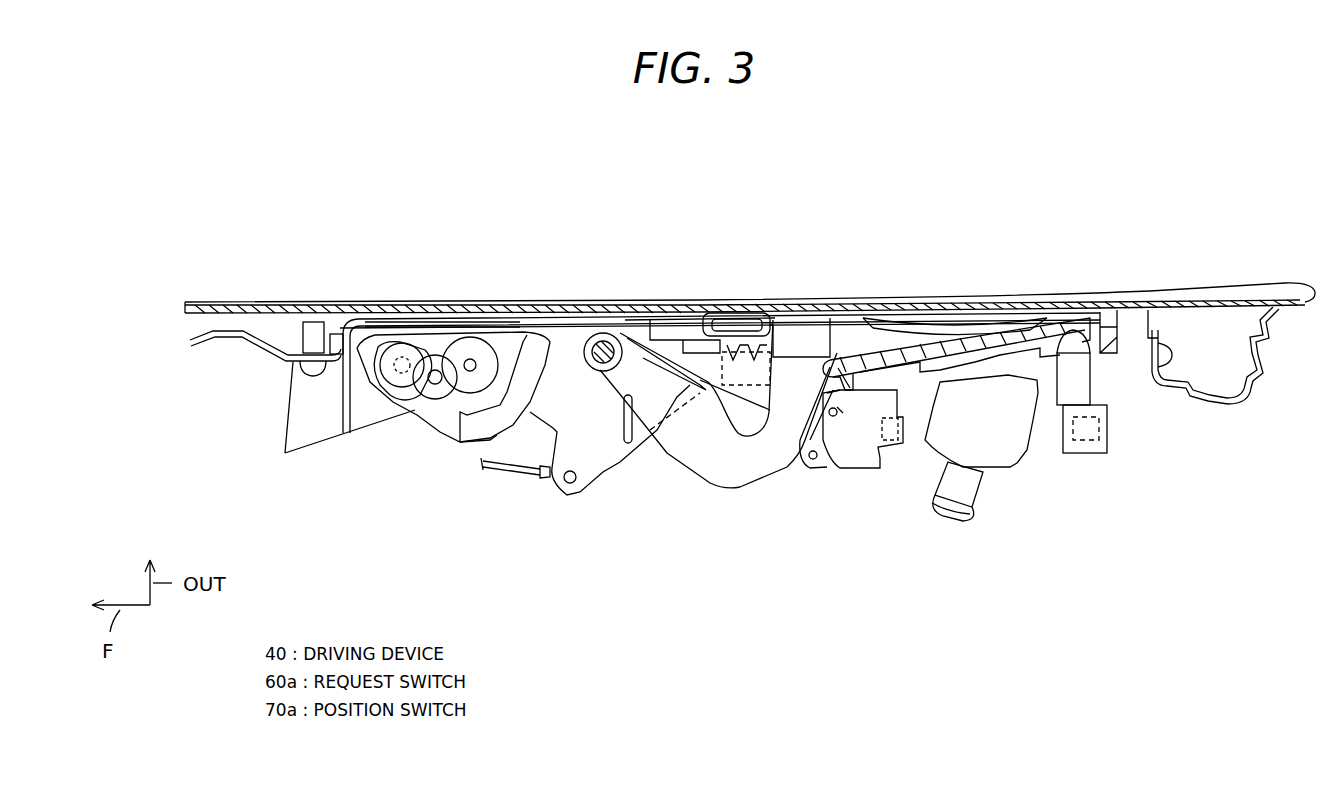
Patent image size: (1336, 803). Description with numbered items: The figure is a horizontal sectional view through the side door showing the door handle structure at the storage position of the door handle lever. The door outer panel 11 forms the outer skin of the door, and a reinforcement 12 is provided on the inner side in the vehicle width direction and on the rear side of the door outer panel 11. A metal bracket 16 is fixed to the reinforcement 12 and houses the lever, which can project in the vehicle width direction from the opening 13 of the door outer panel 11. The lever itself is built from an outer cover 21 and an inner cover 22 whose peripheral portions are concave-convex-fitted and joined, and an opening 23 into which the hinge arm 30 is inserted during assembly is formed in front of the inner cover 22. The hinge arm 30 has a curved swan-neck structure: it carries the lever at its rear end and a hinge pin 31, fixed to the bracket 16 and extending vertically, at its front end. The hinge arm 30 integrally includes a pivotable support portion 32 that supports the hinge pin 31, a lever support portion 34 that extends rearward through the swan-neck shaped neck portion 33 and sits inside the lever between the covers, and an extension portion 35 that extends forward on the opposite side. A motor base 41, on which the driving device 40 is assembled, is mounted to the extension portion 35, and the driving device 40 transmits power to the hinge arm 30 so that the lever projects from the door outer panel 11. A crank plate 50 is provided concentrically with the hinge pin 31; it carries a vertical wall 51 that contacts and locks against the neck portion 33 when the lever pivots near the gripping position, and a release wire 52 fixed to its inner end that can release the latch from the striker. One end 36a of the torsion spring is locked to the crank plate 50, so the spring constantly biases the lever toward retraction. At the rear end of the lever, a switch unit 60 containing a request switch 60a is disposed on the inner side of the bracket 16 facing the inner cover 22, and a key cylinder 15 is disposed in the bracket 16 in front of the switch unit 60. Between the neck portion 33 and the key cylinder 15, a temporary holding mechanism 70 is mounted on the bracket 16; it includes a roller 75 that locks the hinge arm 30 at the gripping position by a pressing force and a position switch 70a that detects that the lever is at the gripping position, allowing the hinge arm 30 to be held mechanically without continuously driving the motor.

The door outer panel 11 is at (557, 310).
The reinforcement 12 is at (235, 340).
The opening 13 is at (707, 320).
The key cylinder 15 is at (1027, 455).
The bracket 16 is at (1152, 316).
The outer cover 21 is at (800, 305).
The inner cover 22 is at (934, 320).
The opening 23 is at (850, 420).
The hinge arm 30 is at (718, 487).
The hinge pin 31 is at (612, 330).
The pivotable support portion 32 is at (578, 335).
The neck portion 33 is at (703, 457).
The lever support portion 34 is at (843, 328).
The extension portion 35 is at (473, 436).
The one end of torsion spring 36a is at (620, 425).
The driving device 40 is at (415, 425).
The motor base 41 is at (513, 345).
The crank plate 50 is at (585, 497).
The vertical wall 51 is at (683, 343).
The release wire 52 is at (505, 470).
The switch unit 60 is at (1075, 460).
The request switch 60a is at (1100, 432).
The temporary holding mechanism 70 is at (857, 482).
The position switch 70a is at (890, 440).
The roller 75 is at (810, 462).